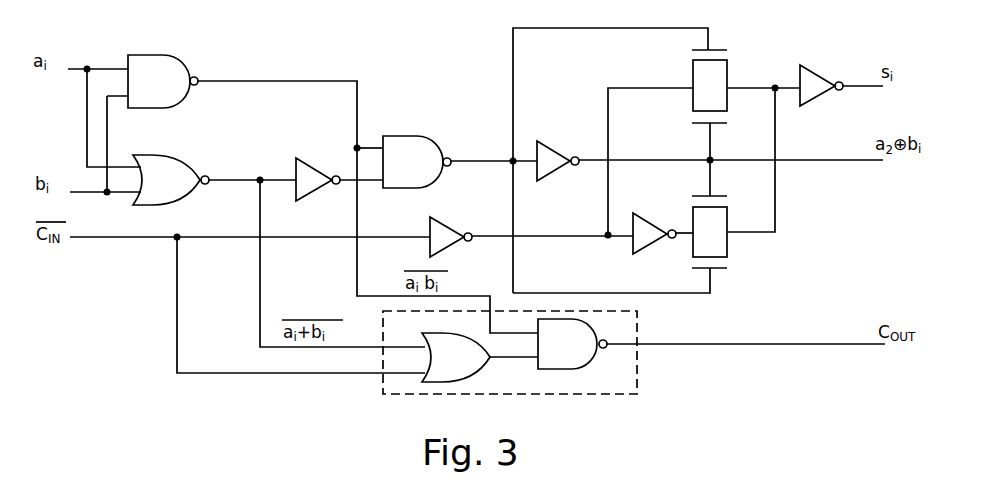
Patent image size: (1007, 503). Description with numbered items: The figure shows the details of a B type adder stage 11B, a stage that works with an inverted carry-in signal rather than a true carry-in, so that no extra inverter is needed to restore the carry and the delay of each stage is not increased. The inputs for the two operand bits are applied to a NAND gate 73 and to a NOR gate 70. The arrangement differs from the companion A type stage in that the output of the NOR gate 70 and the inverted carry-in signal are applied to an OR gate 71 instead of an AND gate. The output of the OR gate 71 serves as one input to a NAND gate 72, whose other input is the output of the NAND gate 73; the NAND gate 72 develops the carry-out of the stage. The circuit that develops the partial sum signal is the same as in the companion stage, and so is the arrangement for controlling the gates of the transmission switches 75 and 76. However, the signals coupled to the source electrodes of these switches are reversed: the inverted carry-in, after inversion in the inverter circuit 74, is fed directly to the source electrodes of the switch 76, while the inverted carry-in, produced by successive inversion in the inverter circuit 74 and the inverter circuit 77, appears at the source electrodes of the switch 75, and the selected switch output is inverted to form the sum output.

The B adder stage 11B is at (463, 39).
The NOR gate 70 is at (171, 180).
The OR gate 71 is at (456, 357).
The NAND gate 72 is at (572, 344).
The NAND gate 73 is at (163, 81).
The inverter circuit 74 is at (445, 231).
The transmission switch 75 is at (732, 245).
The transmission switch 76 is at (731, 69).
The inverter circuit 77 is at (645, 228).